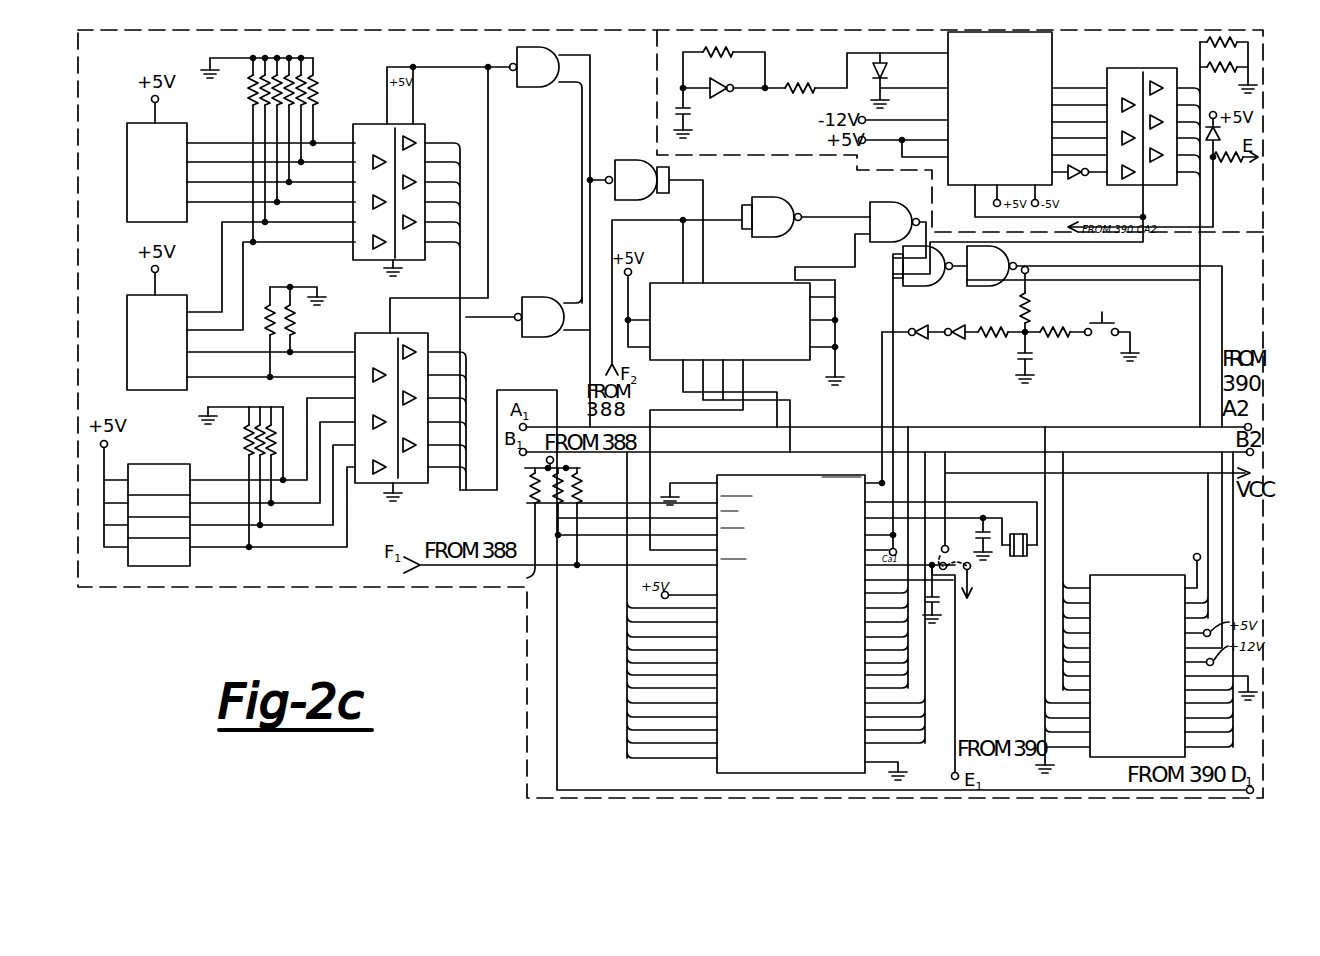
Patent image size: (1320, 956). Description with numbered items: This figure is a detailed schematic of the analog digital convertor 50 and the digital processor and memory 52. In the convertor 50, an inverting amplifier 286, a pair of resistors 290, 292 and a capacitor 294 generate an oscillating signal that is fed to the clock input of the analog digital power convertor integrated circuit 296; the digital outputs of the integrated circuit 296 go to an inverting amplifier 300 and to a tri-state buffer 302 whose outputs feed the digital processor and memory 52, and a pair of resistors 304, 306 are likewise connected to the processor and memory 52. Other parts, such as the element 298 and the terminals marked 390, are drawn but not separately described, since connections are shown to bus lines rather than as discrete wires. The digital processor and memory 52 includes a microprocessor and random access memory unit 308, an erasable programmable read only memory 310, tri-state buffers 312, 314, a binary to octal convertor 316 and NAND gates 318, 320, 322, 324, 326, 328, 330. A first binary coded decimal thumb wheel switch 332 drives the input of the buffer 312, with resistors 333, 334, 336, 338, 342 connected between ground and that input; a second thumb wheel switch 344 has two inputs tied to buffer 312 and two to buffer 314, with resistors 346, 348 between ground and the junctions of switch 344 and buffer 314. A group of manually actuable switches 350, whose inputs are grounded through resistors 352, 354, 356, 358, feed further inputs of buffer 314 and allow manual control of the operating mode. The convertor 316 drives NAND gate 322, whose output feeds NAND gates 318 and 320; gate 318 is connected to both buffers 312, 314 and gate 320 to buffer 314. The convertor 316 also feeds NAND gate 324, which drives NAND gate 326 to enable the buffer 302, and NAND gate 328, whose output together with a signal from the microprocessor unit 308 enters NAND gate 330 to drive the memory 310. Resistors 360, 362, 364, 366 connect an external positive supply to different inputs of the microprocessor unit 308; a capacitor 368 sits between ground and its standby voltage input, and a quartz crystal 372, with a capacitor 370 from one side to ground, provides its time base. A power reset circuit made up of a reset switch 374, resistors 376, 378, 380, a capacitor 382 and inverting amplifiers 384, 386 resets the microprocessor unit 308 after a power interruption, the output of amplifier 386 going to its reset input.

The analog digital convertor 50 is at (657, 101).
The digital processor and memory 52 is at (268, 590).
The inverting amplifier 286 is at (731, 92).
The resistor 290 is at (700, 52).
The resistor 292 is at (828, 80).
The capacitor 294 is at (691, 113).
The analog digital power convertor integrated circuit 296 is at (1052, 71).
The diode 298 is at (920, 45).
The inverting amplifier 300 is at (1088, 178).
The tri-state buffer 302 is at (1130, 50).
The resistor 304 is at (1205, 42).
The resistor 306 is at (1231, 121).
The microprocessor and random access memory unit 308 is at (716, 774).
The erasable programmable read only memory 310 is at (1160, 575).
The tri-state buffer 312 is at (478, 102).
The tri-state buffer 314 is at (372, 333).
The binary to octal convertor 316 is at (762, 364).
The NAND gate 318 is at (520, 90).
The NAND gate 320 is at (560, 272).
The NAND gate 322 is at (638, 160).
The NAND gate 324 is at (772, 205).
The NAND gate 326 is at (882, 202).
The NAND gate 328 is at (893, 258).
The NAND gate 330 is at (1017, 266).
The first binary coded decimal thumb wheel switch 332 is at (178, 188).
The resistor 333 is at (255, 92).
The resistor 334 is at (262, 85).
The resistor 336 is at (275, 100).
The resistor 338 is at (298, 78).
The resistor 342 is at (305, 100).
The second binary coded decimal thumb wheel switch 344 is at (178, 358).
The resistor 346 is at (265, 305).
The resistor 348 is at (292, 330).
The manually actuable switches 350 is at (162, 464).
The resistor 352 is at (248, 440).
The resistor 354 is at (206, 412).
The resistor 356 is at (260, 425).
The resistor 358 is at (274, 425).
The resistor 360 is at (535, 492).
The resistor 362 is at (525, 488).
The resistor 364 is at (532, 585).
The resistor 366 is at (585, 486).
The capacitor 368 is at (935, 603).
The capacitor 370 is at (992, 534).
The quartz crystal 372 is at (1018, 556).
The reset switch 374 is at (1104, 320).
The resistor 376 is at (1052, 338).
The resistor 378 is at (1032, 308).
The resistor 380 is at (992, 340).
The capacitor 382 is at (1022, 362).
The inverting amplifier 384 is at (948, 338).
The inverting amplifier 386 is at (910, 330).
The supply connection 390 is at (372, 92).